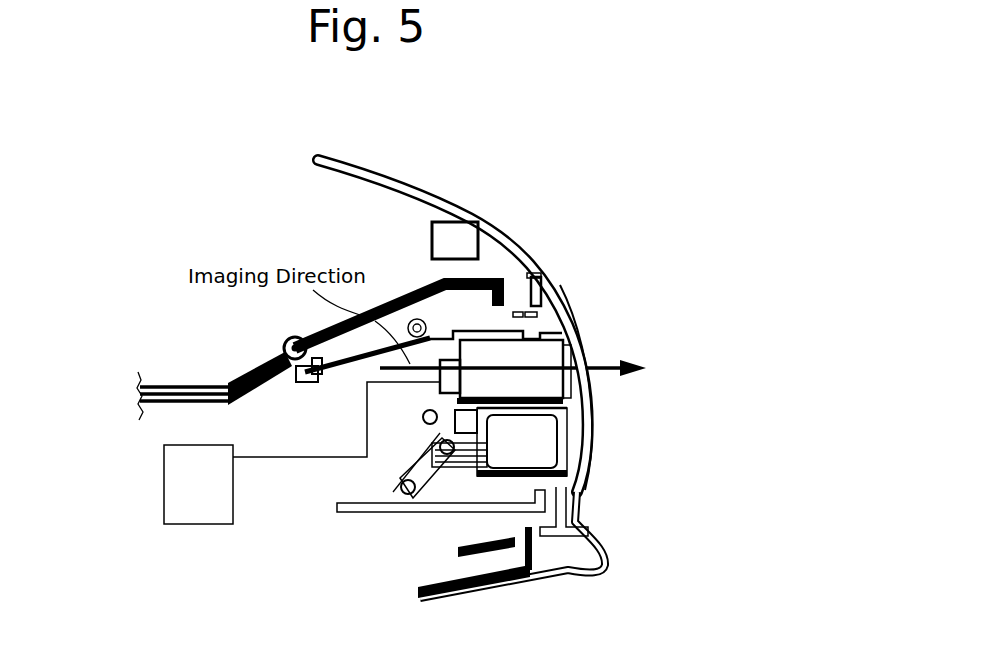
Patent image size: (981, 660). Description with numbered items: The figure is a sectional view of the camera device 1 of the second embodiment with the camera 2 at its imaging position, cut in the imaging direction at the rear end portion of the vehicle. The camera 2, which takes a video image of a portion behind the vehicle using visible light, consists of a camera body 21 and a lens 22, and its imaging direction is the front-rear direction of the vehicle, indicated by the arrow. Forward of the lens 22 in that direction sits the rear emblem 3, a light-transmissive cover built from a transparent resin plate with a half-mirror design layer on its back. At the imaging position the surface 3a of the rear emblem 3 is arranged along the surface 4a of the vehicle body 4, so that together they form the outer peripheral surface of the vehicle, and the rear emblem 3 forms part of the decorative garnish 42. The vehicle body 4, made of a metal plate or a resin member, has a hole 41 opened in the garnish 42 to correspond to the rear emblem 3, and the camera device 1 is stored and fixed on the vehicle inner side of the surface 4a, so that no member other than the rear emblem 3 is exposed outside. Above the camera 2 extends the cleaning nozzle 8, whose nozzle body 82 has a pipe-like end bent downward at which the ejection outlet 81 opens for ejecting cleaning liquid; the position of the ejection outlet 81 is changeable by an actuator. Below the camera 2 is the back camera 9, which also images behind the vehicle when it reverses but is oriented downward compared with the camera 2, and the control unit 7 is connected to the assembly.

The camera device 1 is at (165, 255).
The camera 2 is at (543, 318).
The camera body 21 is at (523, 350).
The lens 22 is at (562, 352).
The rear emblem 3 is at (668, 387).
The surface of the rear emblem 3a is at (592, 416).
The vehicle body 4 is at (495, 356).
The surface of the vehicle body 4a is at (495, 356).
The garnish 42 is at (497, 232).
The hole 41 is at (586, 473).
The control unit 7 is at (213, 488).
The cleaning nozzle 8 is at (317, 259).
The nozzle body 82 is at (418, 292).
The ejection outlet 81 is at (514, 312).
The back camera 9 is at (495, 472).